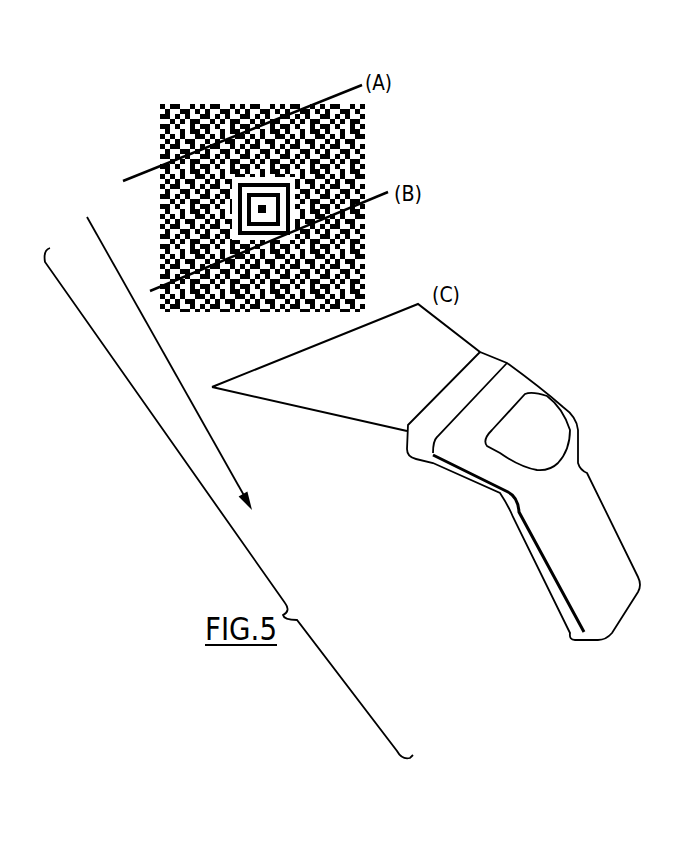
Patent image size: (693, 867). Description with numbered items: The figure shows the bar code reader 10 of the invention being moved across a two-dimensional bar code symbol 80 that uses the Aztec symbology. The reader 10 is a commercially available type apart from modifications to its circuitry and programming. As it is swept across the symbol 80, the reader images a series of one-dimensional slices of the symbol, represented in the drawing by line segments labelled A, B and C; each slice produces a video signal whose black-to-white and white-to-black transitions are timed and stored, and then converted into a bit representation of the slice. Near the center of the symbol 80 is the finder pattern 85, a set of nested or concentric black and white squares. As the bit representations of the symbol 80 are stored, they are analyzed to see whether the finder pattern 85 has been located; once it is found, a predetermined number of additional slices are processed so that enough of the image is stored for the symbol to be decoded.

The reader 10 is at (598, 512).
The 2D bar code symbol 80 is at (278, 105).
The finder pattern 85 is at (290, 197).